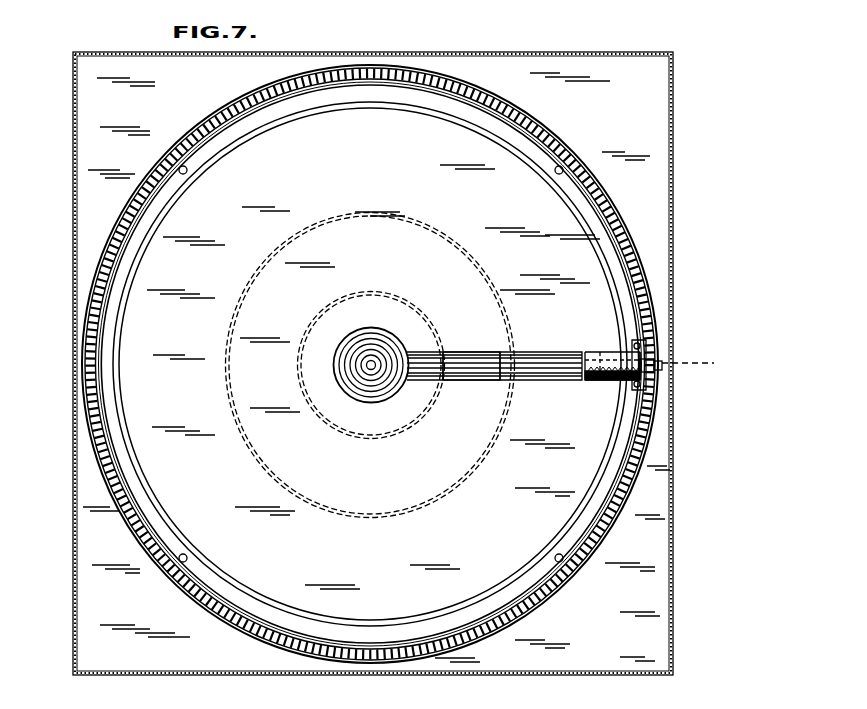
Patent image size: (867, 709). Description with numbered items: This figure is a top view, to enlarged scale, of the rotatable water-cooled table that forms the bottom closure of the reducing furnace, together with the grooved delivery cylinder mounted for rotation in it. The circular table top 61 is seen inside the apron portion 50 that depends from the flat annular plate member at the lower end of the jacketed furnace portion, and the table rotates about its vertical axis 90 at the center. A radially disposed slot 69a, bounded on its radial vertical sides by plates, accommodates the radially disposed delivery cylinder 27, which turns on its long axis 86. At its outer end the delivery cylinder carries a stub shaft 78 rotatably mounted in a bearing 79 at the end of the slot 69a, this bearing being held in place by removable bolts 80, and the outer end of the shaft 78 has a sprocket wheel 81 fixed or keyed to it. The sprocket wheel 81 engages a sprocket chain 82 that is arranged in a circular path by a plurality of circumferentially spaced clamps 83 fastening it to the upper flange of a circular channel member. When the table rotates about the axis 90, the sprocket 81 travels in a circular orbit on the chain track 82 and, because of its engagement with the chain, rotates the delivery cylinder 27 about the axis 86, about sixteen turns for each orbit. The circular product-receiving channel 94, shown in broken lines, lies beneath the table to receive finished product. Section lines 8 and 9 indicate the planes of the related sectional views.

The apron portion 50 is at (672, 503).
The circular table top 61 is at (252, 158).
The sprocket chain 82 is at (560, 590).
The clamps 83 is at (185, 172).
The circular product-receiving channel 94 is at (376, 510).
The vertical axis 90 is at (371, 365).
The delivery cylinder 27 is at (470, 376).
The radially disposed slot 69a is at (468, 352).
The section line 9 is at (554, 392).
The stub shaft 78 is at (592, 352).
The bearing 79 is at (612, 381).
The removable bolts 80 is at (643, 350).
The sprocket wheel 81 is at (658, 362).
The long axis 86 is at (712, 363).
The section line 8 is at (692, 374).